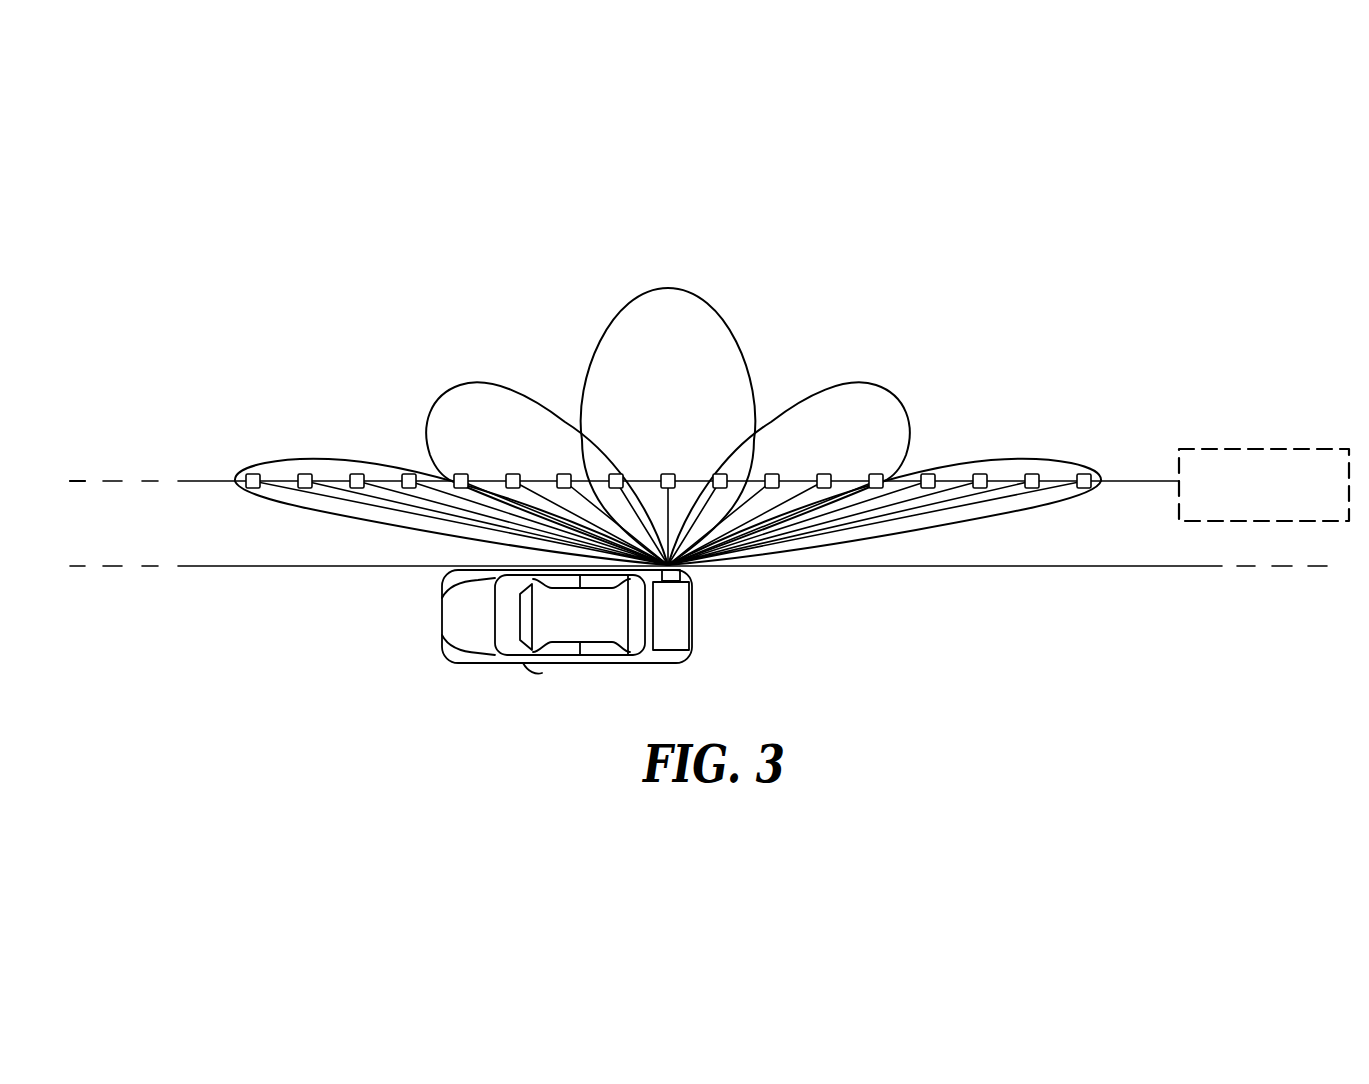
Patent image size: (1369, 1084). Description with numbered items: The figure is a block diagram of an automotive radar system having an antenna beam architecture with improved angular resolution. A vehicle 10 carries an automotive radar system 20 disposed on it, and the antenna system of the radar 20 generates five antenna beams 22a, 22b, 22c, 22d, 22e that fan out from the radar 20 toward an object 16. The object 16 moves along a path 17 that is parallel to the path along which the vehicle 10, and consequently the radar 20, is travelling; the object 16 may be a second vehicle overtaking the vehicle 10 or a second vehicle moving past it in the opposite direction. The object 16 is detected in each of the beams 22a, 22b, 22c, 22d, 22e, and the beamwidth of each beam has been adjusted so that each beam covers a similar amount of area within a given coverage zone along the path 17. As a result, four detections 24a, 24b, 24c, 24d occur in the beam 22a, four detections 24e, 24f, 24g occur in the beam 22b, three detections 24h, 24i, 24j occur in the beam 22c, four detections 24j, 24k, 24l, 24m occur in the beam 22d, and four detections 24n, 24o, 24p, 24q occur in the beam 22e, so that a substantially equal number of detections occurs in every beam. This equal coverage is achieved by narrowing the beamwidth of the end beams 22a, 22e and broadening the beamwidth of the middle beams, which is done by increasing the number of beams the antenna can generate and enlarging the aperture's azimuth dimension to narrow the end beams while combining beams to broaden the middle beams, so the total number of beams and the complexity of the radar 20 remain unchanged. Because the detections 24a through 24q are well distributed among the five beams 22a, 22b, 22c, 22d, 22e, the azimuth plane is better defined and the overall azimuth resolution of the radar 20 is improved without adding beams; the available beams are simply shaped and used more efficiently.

The vehicle 10 is at (442, 625).
The object 16 is at (1266, 448).
The path 17 is at (77, 478).
The automotive radar system 20 is at (682, 575).
The antenna beam 22a is at (293, 513).
The antenna beam 22b is at (470, 383).
The antenna beam 22c is at (668, 288).
The antenna beam 22d is at (871, 385).
The antenna beam 22e is at (1010, 528).
The detection 24a is at (253, 473).
The detection 24b is at (305, 473).
The detection 24c is at (357, 473).
The detection 24d is at (409, 473).
The detection 24e is at (461, 473).
The detection 24f is at (513, 473).
The detection 24g is at (564, 473).
The detection 24h is at (616, 473).
The detection 24i is at (668, 473).
The detection 24j is at (720, 473).
The detection 24k is at (772, 473).
The detection 24l is at (824, 473).
The detection 24m is at (876, 473).
The detection 24n is at (928, 473).
The detection 24o is at (980, 473).
The detection 24p is at (1032, 473).
The detection 24q is at (1084, 473).